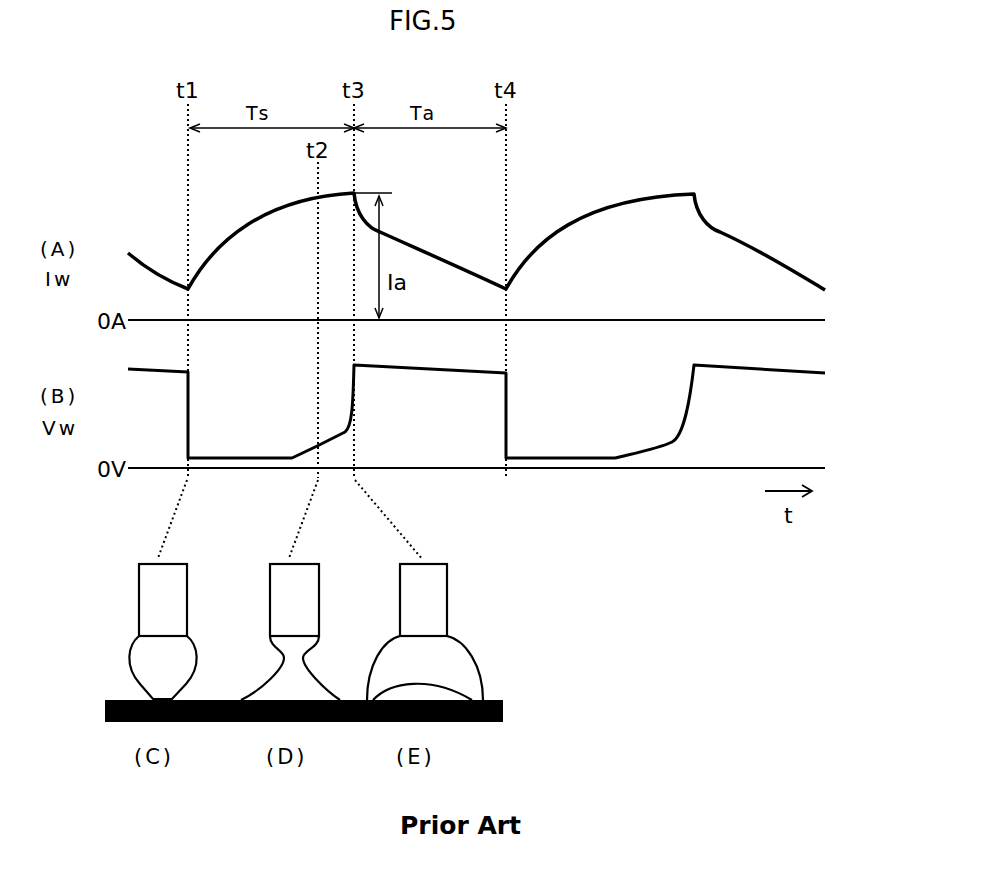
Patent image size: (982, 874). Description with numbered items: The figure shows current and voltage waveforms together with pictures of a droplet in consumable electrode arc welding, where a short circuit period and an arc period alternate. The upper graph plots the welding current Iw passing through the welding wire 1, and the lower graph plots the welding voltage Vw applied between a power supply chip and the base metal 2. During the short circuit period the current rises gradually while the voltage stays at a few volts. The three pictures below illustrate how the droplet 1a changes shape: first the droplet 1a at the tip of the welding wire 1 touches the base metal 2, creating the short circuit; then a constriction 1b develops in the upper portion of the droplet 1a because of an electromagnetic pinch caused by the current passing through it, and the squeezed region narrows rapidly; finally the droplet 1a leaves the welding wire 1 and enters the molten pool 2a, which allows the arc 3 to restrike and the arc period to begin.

The welding wire 1 is at (137, 607).
The droplet 1a is at (130, 660).
The constriction 1b is at (275, 653).
The base metal 2 is at (127, 700).
The molten pool 2a is at (420, 685).
The arc 3 is at (460, 646).